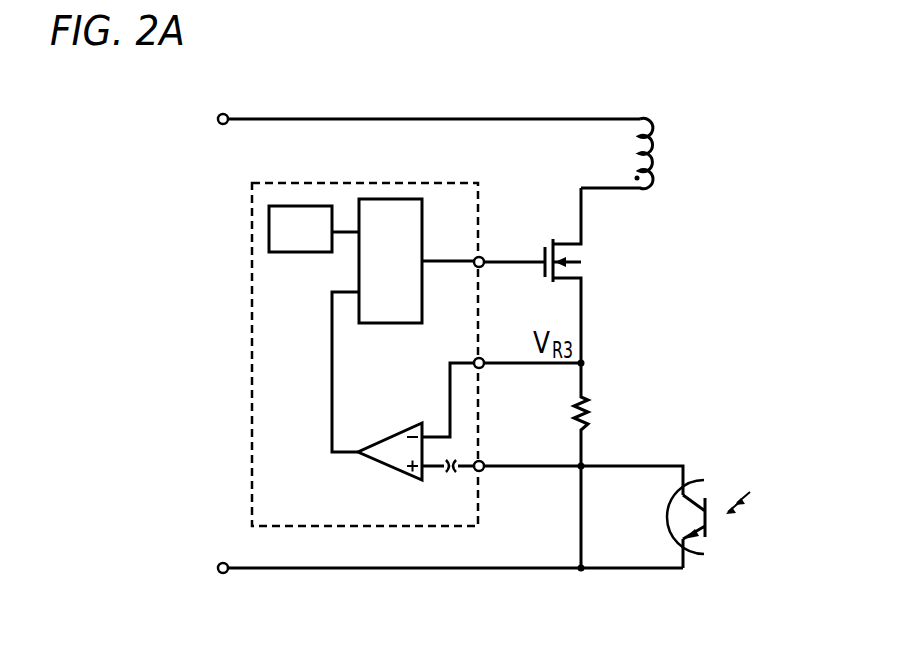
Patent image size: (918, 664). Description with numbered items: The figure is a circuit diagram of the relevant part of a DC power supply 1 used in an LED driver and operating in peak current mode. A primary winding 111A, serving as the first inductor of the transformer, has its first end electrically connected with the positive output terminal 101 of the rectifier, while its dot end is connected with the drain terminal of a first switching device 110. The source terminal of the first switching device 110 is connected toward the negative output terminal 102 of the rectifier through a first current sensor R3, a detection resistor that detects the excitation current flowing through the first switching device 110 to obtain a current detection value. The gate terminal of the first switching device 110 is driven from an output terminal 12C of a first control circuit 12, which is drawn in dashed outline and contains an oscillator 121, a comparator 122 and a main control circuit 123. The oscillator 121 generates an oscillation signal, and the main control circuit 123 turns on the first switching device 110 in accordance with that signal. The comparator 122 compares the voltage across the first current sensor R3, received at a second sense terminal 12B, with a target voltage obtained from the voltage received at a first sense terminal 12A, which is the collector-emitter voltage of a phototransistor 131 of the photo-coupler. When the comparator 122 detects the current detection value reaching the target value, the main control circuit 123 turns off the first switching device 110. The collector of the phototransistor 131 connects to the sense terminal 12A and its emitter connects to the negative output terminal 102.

The DC power supply 1 is at (745, 67).
The positive output terminal 101 is at (223, 113).
The negative output terminal 102 is at (222, 574).
The primary winding 111A is at (657, 158).
The first switching device 110 is at (587, 254).
The first control circuit 12 is at (250, 346).
The sense terminal 12A is at (482, 470).
The sense terminal 12B is at (482, 367).
The output terminal 12C is at (482, 258).
The oscillator 121 is at (300, 253).
The comparator 122 is at (385, 428).
The main control circuit 123 is at (392, 318).
The phototransistor 131 is at (662, 521).
The first current sensor R3 is at (599, 414).